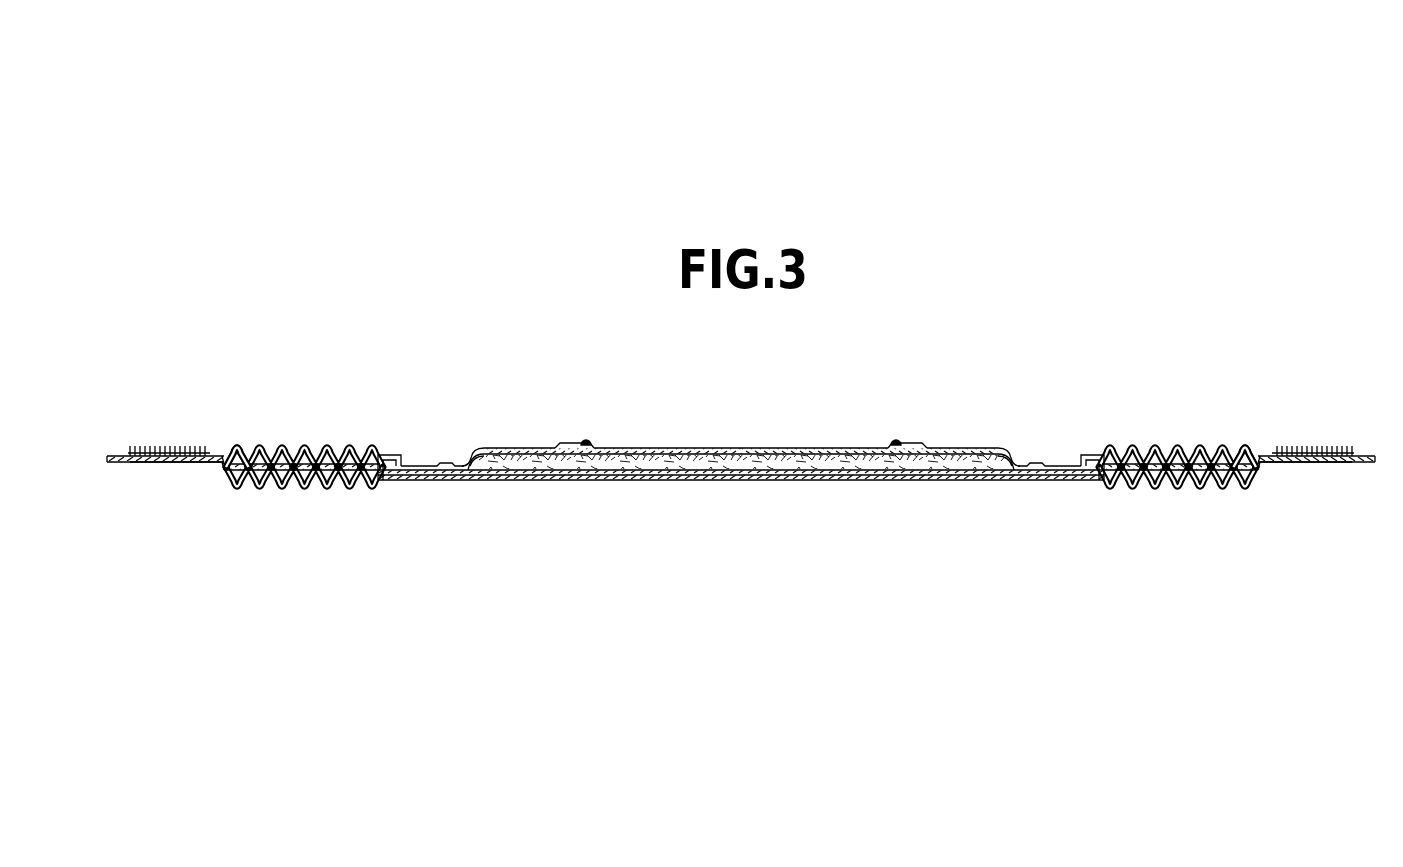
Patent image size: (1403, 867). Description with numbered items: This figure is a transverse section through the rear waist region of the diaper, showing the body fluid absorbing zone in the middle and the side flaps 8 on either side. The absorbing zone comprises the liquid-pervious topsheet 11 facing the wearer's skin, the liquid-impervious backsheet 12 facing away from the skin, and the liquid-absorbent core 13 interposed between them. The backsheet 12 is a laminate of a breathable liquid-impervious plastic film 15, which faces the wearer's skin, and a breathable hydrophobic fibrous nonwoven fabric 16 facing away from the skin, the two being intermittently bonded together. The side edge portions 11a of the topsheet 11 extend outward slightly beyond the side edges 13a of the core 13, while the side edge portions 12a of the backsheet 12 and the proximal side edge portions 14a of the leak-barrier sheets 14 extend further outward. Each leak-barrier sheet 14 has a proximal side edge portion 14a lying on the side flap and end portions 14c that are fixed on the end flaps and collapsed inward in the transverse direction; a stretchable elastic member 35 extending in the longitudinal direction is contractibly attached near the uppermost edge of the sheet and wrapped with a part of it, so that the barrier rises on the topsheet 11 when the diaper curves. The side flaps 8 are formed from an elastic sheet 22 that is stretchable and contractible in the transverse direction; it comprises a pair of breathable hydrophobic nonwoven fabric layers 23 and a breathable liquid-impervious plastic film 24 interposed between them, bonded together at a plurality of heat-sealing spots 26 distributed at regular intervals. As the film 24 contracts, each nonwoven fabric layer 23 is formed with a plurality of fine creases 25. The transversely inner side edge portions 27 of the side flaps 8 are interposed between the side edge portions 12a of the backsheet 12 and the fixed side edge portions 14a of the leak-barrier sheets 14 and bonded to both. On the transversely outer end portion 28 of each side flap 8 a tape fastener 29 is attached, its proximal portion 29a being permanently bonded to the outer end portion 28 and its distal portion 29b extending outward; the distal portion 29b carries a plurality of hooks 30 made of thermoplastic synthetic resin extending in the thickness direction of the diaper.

The side flap 8 is at (225, 466).
The topsheet 11 is at (770, 455).
The side edge portion of the topsheet 11a is at (457, 481).
The backsheet 12 is at (846, 481).
The side edge portion of the backsheet 12a is at (410, 481).
The core 13 is at (664, 457).
The side edge of the core 13a is at (480, 472).
The leak-barrier sheet 14 is at (477, 449).
The proximal side edge portion of the leak-barrier sheet 14a is at (428, 465).
The end portion of the leak-barrier sheet 14c is at (559, 444).
The plastic film 15 is at (768, 471).
The nonwoven fabric 16 is at (670, 481).
The elastic sheet 22 is at (223, 471).
The nonwoven fabric layer 23 is at (318, 455).
The plastic film 24 is at (353, 481).
The fine creases 25 is at (283, 452).
The heat-sealing spot 26 is at (342, 460).
The inner side edge portion of the side flap 27 is at (390, 455).
The outer end portion of the side flap 28 is at (238, 489).
The tape fastener 29 is at (118, 456).
The proximal portion of the tape fastener 29a is at (237, 447).
The distal portion of the tape fastener 29b is at (138, 463).
The hooks 30 is at (157, 452).
The elastic member 35 is at (588, 443).